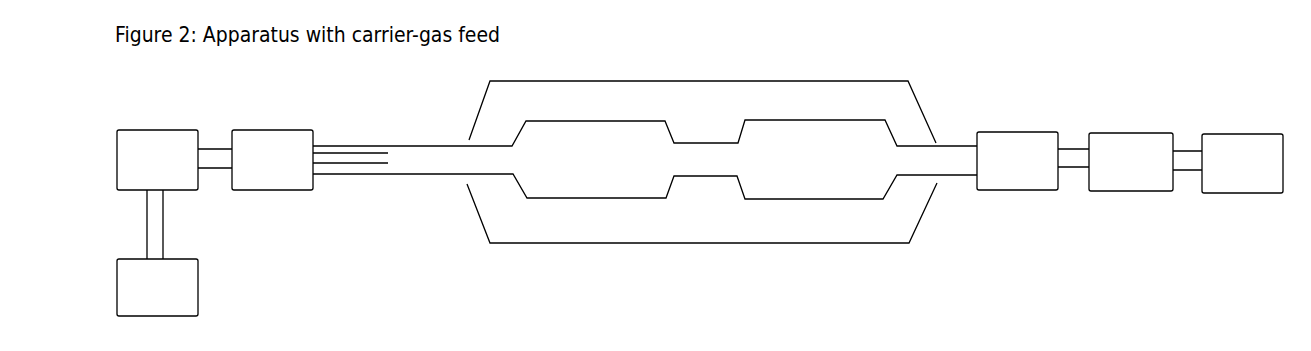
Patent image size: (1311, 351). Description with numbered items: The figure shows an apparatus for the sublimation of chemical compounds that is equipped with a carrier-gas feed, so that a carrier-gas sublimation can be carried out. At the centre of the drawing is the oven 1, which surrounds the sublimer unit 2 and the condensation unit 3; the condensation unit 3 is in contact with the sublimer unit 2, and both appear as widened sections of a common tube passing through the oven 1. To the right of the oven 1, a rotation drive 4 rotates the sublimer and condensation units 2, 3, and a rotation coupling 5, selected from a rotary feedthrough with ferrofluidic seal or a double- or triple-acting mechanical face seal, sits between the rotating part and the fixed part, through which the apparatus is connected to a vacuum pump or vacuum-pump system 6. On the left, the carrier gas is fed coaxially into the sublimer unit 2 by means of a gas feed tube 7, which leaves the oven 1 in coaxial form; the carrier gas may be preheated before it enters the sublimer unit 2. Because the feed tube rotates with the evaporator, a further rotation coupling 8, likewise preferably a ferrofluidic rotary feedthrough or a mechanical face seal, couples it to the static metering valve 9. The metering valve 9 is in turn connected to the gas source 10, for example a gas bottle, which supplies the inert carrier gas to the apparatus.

The oven 1 is at (531, 229).
The sublimer unit 2 is at (596, 159).
The condensation unit 3 is at (815, 159).
The rotation drive 4 is at (1017, 161).
The rotation coupling 5 is at (1131, 162).
The vacuum pump or vacuum-pump system 6 is at (1242, 163).
The gas feed tube 7 is at (355, 165).
The rotation coupling 8 is at (272, 160).
The metering valve 9 is at (157, 160).
The gas source 10 is at (157, 287).